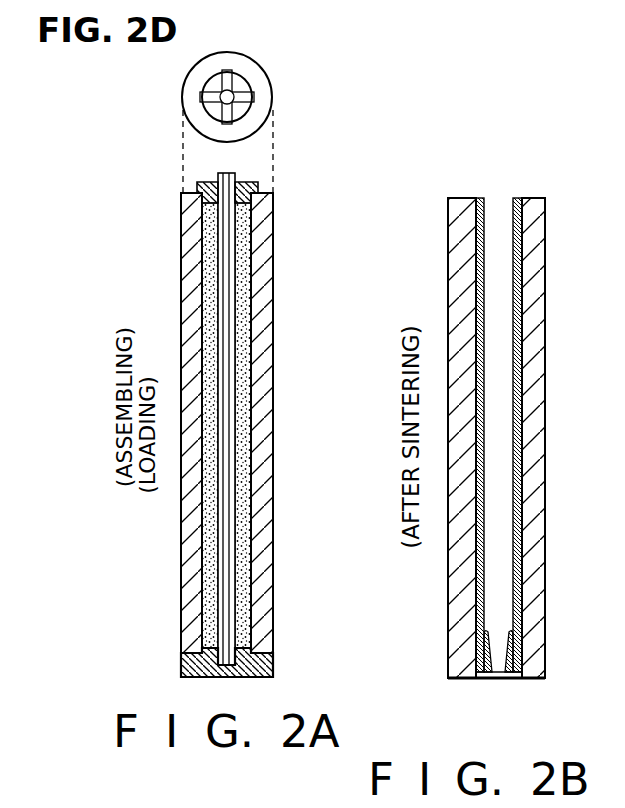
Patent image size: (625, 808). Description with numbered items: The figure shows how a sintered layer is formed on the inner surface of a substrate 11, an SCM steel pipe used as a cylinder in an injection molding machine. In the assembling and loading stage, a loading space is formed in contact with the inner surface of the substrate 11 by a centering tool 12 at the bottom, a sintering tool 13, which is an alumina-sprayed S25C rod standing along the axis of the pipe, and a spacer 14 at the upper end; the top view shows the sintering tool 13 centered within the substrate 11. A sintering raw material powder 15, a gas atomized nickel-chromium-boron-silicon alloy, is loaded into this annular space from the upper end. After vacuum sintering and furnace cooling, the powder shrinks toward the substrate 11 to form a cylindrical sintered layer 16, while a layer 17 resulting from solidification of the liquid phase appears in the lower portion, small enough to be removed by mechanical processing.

In FIG. 2D, the substrate 11 is at (242, 66).
In FIG. 2A, the substrate 11 is at (258, 290).
In FIG. 2B, the substrate 11 is at (537, 282).
In FIG. 2A, the centering tool 12 is at (270, 665).
In FIG. 2A, the sintering tool 13 is at (230, 375).
In FIG. 2D, the spacer 14 is at (253, 98).
In FIG. 2A, the spacer 14 is at (258, 186).
In FIG. 2A, the sintering raw material powder 15 is at (243, 465).
In FIG. 2B, the sintered layer 16 is at (525, 458).
In FIG. 2B, the layer resulting from solidification of the liquid phase 17 is at (499, 650).